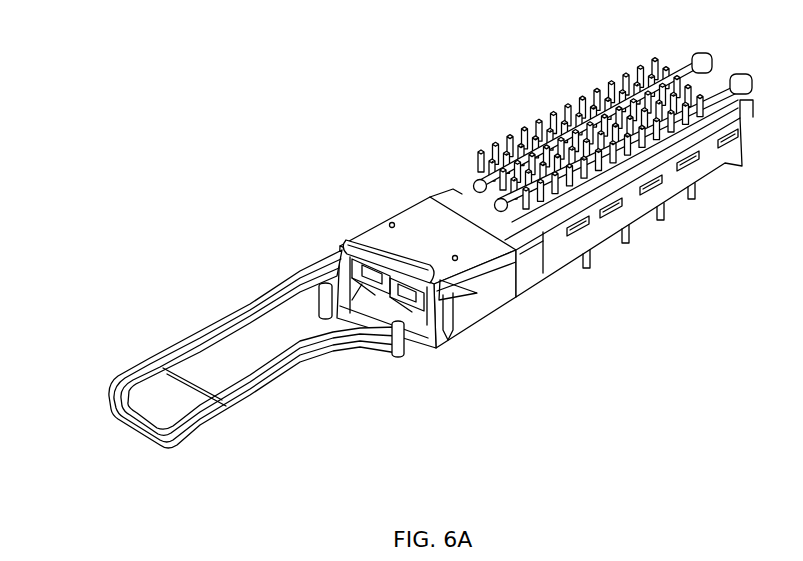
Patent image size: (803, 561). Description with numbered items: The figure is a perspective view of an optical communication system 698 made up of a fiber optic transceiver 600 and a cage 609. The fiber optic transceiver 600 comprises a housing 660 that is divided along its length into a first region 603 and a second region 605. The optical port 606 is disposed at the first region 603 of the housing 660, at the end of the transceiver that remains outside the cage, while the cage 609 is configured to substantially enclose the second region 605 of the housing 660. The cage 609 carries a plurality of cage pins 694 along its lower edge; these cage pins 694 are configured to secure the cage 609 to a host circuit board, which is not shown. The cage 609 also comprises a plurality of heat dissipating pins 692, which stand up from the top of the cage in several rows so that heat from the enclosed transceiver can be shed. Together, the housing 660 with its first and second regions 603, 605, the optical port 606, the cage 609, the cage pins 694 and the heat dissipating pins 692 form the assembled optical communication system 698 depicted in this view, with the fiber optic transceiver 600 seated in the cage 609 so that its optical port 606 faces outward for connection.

The optical communication system 698 is at (57, 48).
The fiber optic transceiver 600 is at (395, 173).
The optical port 606 is at (378, 357).
The heat dissipating pins 692 is at (497, 146).
The cage 609 is at (543, 81).
The cage pins 694 is at (584, 265).
The first region 603 is at (440, 387).
The second region 605 is at (563, 323).
The housing 660 is at (538, 432).